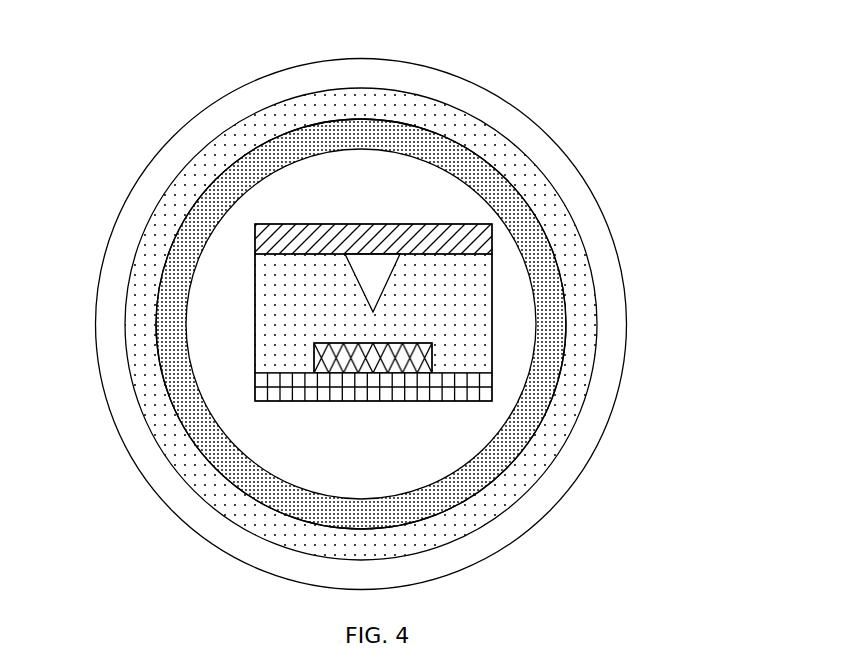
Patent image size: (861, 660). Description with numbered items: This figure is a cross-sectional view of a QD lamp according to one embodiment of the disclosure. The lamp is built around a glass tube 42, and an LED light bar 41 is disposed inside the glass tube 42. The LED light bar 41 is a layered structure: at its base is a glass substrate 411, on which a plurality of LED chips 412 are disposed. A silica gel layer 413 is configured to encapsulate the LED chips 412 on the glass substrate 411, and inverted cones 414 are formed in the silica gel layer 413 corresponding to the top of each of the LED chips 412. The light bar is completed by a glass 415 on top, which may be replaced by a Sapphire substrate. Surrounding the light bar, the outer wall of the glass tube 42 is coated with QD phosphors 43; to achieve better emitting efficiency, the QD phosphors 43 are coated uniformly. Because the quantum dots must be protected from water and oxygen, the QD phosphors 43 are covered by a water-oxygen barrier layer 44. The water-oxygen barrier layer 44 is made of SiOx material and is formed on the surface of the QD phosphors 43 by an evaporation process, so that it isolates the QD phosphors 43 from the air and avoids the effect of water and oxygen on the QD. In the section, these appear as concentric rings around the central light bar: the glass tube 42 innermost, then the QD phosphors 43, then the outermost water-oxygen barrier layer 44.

The LED light bar 41 is at (377, 210).
The glass substrate 411 is at (458, 383).
The LED chips 412 is at (393, 347).
The silica gel layer 413 is at (412, 258).
The inverted cones 414 is at (373, 265).
The glass 415 is at (325, 224).
The glass tube 42 is at (547, 352).
The QD phosphors 43 is at (568, 410).
The water-oxygen barrier layer 44 is at (586, 443).